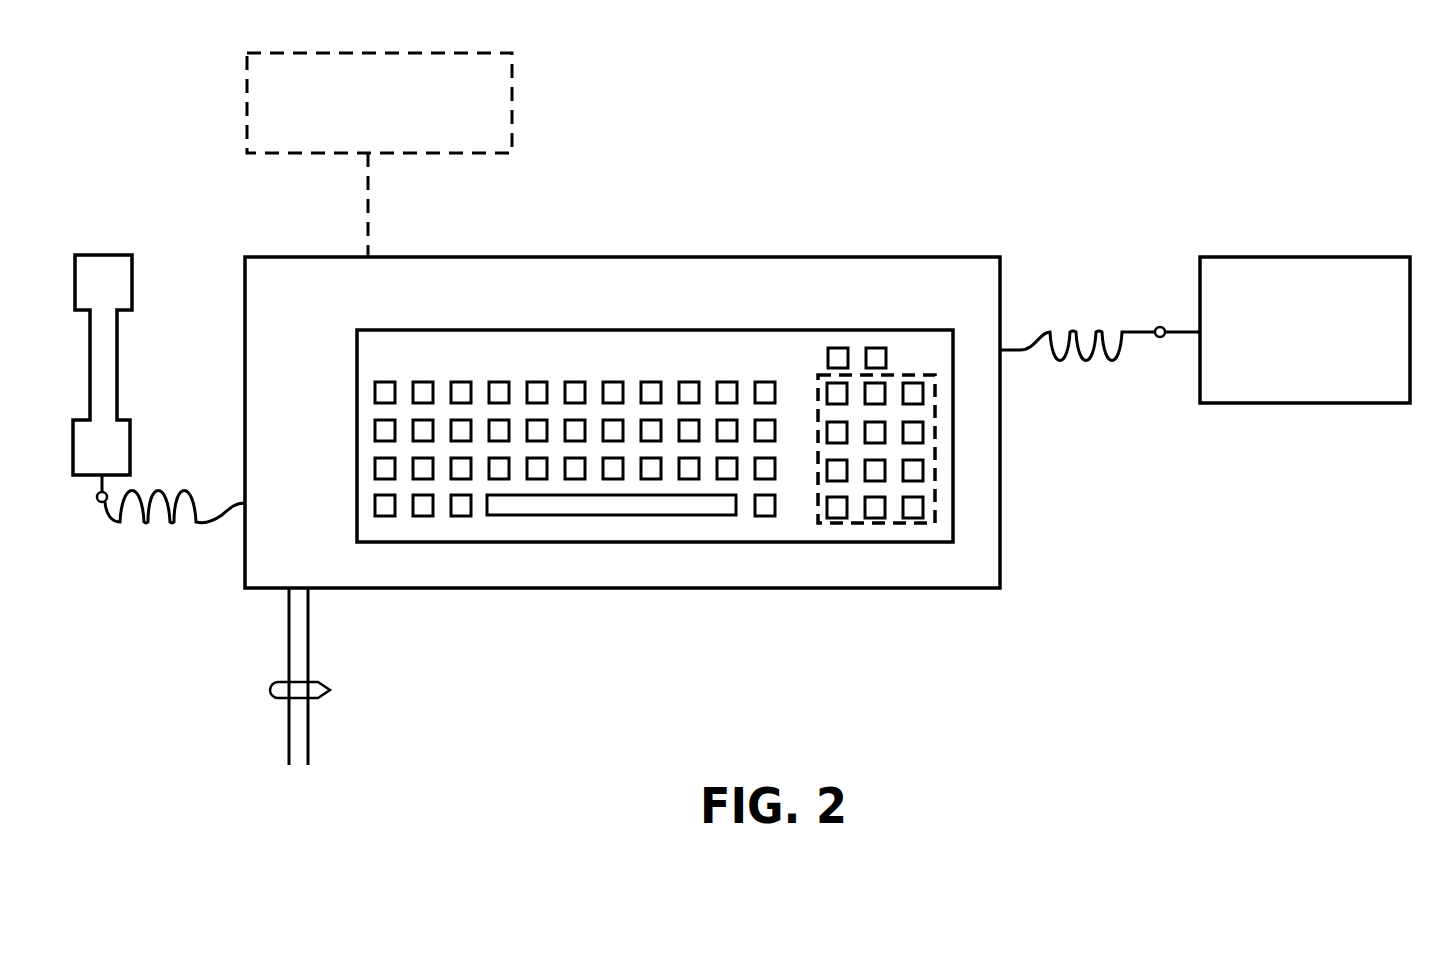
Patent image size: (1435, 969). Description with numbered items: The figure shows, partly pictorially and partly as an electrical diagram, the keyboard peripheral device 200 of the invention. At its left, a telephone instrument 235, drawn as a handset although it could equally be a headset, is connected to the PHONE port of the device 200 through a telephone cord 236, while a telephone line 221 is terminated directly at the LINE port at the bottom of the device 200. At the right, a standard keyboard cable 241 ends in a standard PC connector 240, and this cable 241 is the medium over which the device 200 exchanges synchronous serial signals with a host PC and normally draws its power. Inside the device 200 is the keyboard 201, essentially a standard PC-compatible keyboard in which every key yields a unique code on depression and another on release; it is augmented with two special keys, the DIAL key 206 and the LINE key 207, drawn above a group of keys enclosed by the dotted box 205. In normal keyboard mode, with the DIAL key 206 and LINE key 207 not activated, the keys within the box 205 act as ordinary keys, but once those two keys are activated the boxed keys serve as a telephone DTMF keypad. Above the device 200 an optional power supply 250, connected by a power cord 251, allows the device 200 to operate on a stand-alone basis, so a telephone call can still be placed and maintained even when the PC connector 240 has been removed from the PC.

The keyboard peripheral device 200 is at (718, 258).
The keyboard 201 is at (793, 545).
The dotted box 205 is at (870, 523).
The DIAL key 206 is at (840, 348).
The LINE key 207 is at (877, 348).
The telephone line 221 is at (333, 690).
The telephone instrument 235 is at (103, 373).
The telephone cord 236 is at (97, 502).
The standard PC connector 240 is at (1307, 257).
The standard keyboard cable 241 is at (1158, 338).
The optional power supply 250 is at (512, 93).
The power cord 251 is at (368, 217).